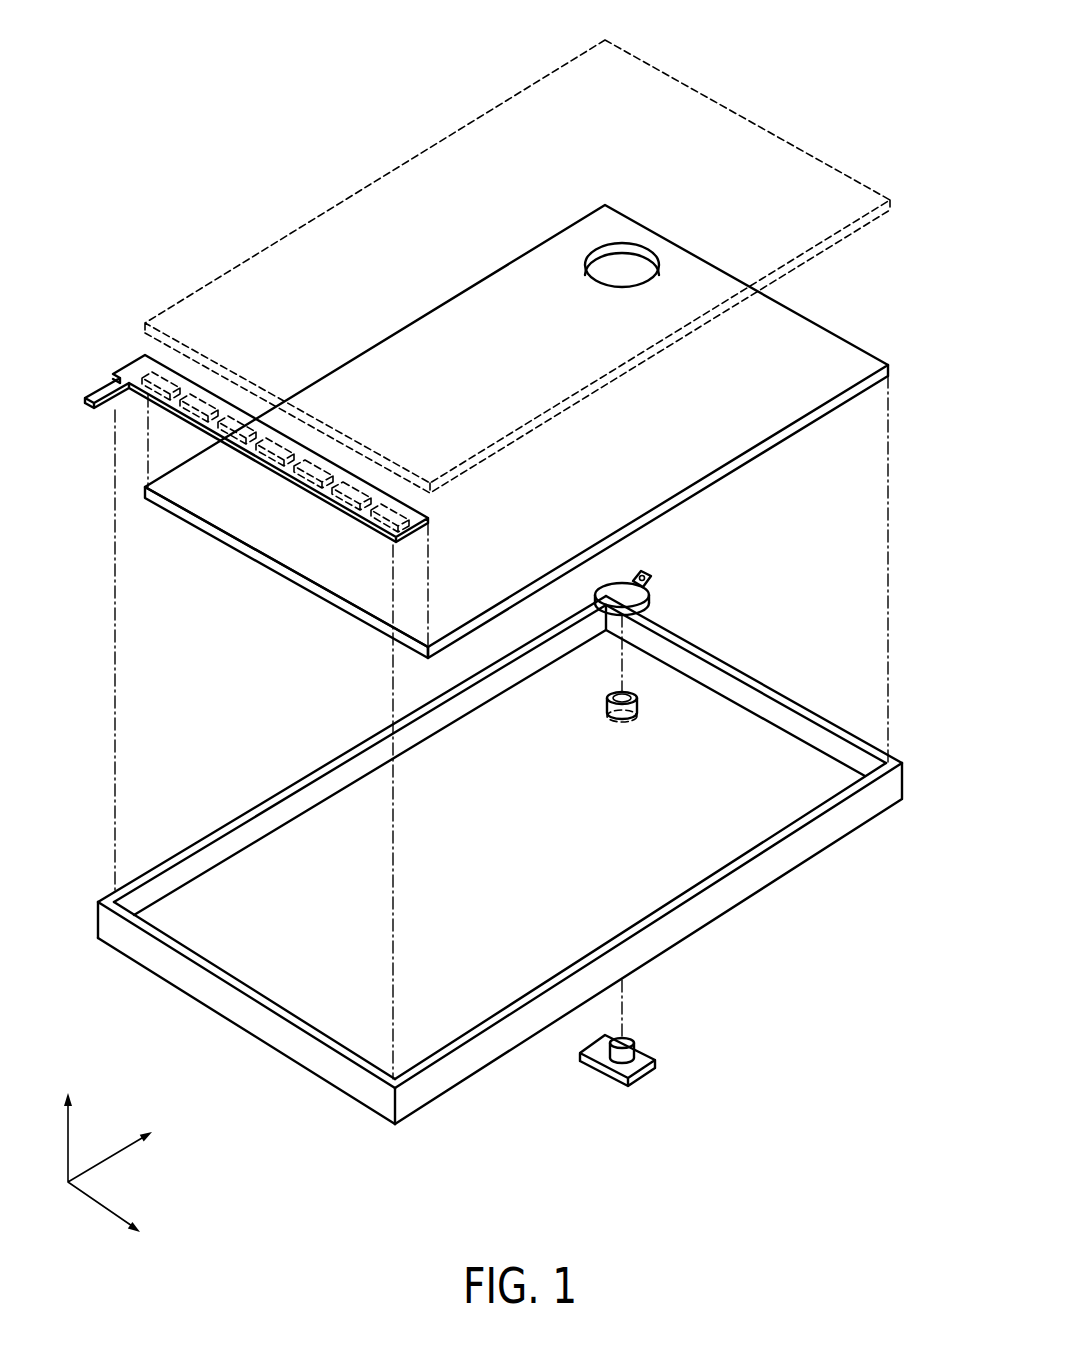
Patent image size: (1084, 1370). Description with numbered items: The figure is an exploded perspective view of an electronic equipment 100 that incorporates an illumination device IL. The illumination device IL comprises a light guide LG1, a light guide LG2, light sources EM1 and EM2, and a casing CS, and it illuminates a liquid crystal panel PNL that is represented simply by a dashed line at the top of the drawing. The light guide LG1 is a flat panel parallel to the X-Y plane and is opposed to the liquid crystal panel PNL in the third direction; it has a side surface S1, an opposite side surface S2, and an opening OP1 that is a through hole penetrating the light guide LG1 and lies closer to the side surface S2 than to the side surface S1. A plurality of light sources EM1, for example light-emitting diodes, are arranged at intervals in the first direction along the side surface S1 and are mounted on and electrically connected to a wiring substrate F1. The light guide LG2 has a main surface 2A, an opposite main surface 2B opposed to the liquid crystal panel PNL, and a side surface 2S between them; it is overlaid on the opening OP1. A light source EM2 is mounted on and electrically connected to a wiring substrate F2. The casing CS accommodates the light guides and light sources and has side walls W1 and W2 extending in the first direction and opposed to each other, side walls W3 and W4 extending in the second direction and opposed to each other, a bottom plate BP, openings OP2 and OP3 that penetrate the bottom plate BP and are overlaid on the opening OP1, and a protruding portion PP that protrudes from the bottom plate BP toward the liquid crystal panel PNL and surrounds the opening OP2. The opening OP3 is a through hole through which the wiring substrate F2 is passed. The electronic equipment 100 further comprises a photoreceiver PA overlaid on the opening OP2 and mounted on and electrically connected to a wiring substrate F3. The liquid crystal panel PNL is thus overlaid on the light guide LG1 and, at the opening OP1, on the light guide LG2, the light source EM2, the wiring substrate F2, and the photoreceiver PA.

The electronic equipment 100 is at (792, 48).
The liquid crystal panel PNL is at (781, 155).
The opening OP1 is at (628, 272).
The side surface S2 is at (817, 311).
The light guide LG1 is at (542, 414).
The wiring substrate F1 is at (256, 422).
The light sources EM1 is at (310, 476).
The side surface S1 is at (265, 562).
The light guide LG2 is at (654, 569).
The main surface 2B is at (624, 584).
The wiring substrate F2 is at (649, 575).
The light source EM2 is at (650, 600).
The main surface 2A is at (633, 626).
The side surface 2S is at (601, 610).
The protruding portion PP is at (607, 737).
The opening OP2 is at (612, 719).
The opening OP3 is at (642, 707).
The side wall W3 is at (333, 770).
The side wall W2 is at (835, 718).
The side wall W4 is at (682, 897).
The bottom plate BP is at (500, 900).
The side wall W1 is at (246, 1053).
The illumination device IL is at (316, 1105).
The casing CS is at (393, 1126).
The photoreceiver PA is at (600, 1073).
The wiring substrate F3 is at (650, 1070).